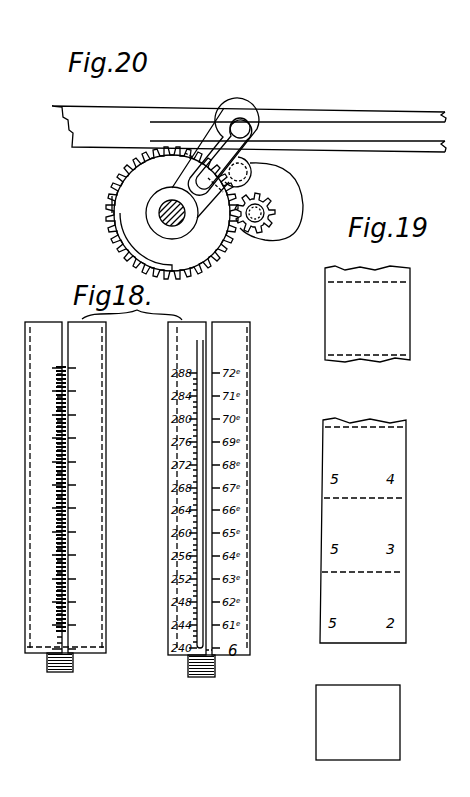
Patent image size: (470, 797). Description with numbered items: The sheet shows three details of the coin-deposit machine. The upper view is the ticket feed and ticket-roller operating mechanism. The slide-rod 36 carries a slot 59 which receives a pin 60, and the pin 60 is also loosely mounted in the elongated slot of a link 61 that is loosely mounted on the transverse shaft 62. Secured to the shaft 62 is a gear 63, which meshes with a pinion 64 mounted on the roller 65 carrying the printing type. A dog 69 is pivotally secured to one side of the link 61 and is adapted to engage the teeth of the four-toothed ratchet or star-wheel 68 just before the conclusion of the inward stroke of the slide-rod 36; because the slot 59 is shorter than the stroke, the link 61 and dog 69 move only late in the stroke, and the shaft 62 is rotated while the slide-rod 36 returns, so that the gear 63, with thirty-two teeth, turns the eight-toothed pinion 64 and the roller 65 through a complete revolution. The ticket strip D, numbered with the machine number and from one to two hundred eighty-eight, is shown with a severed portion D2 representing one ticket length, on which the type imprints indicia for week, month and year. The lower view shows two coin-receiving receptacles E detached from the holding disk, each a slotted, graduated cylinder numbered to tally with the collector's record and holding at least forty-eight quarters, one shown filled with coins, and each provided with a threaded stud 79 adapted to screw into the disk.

In FIG. 20, the slide-rod 36 is at (167, 118).
In FIG. 20, the slot 59 is at (306, 126).
In FIG. 20, the pin 60 is at (238, 124).
In FIG. 20, the link 61 is at (253, 106).
In FIG. 20, the shaft 62 is at (170, 209).
In FIG. 20, the gear 63 is at (114, 222).
In FIG. 20, the pinion 64 is at (242, 233).
In FIG. 20, the roller 65 is at (259, 210).
In FIG. 20, the star-wheel 68 is at (195, 252).
In FIG. 20, the dog 69 is at (270, 232).
In FIG. 18, the threaded stud 79 is at (52, 672).
In FIG. 19, the ticket strip D is at (398, 308).
In FIG. 19, the severed ticket D2 is at (316, 743).
In FIG. 18, the coin-receiving receptacles E is at (166, 637).